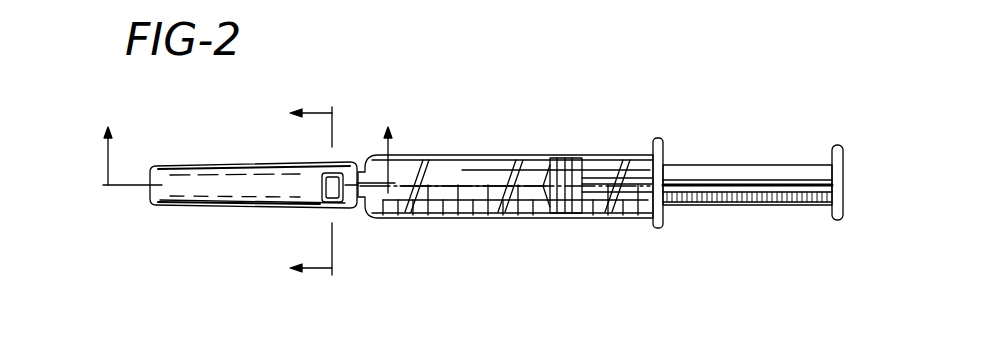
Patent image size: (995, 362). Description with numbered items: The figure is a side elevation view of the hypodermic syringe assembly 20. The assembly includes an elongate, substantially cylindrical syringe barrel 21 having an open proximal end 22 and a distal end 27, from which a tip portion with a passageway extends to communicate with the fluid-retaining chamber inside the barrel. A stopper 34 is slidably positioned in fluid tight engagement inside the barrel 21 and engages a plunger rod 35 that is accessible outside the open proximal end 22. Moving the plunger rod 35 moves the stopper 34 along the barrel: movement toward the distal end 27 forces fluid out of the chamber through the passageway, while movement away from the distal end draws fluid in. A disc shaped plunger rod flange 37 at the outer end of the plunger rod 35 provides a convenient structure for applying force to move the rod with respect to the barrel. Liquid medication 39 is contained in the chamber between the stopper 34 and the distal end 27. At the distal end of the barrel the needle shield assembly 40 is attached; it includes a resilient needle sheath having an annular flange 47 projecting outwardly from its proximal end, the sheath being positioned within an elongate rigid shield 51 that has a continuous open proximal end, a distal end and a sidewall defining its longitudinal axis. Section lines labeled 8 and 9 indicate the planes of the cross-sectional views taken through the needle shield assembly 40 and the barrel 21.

The section line 8- 8 is at (314, 191).
The section line 9- 9 is at (246, 146).
The hypodermic syringe assembly 20 is at (603, 111).
The syringe barrel 21 is at (512, 155).
The open proximal end 22 is at (665, 148).
The distal end 27 is at (391, 218).
The stopper 34 is at (556, 214).
The plunger rod 35 is at (773, 165).
The plunger rod flange 37 is at (834, 212).
The liquid medication 39 is at (448, 182).
The needle shield assembly 40 is at (190, 162).
The annular flange 47 is at (325, 185).
The rigid shield 51 is at (186, 196).